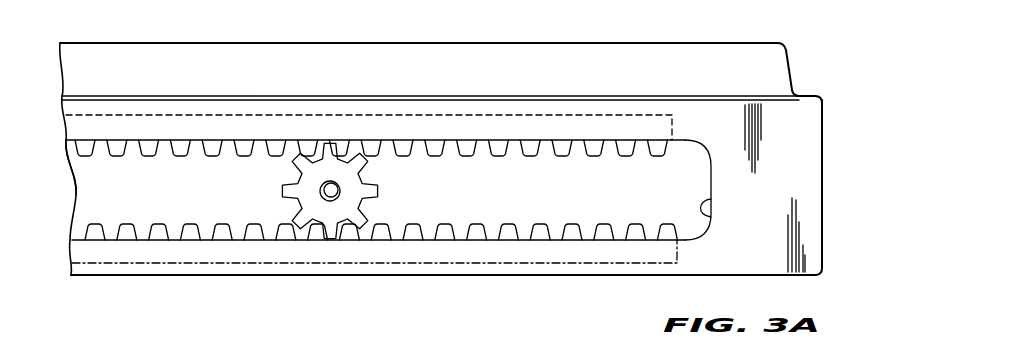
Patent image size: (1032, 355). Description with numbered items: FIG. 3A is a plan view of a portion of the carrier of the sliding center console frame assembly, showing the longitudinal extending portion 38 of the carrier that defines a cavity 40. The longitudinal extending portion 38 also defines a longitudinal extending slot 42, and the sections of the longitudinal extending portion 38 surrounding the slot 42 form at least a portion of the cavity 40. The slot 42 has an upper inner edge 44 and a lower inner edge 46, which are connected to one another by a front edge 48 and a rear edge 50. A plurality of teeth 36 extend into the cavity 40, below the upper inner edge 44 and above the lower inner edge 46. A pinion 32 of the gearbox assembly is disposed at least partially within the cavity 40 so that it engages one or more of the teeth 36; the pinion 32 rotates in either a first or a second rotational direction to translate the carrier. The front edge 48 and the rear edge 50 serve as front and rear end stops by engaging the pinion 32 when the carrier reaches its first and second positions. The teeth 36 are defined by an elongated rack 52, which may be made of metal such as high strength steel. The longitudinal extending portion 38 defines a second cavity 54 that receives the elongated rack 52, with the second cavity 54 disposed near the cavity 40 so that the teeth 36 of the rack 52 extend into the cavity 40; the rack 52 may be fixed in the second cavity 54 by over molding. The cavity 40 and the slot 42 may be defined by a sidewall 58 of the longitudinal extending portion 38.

The pinion 32 is at (330, 208).
The plurality of teeth 36 is at (667, 232).
The longitudinal extending portion 38 is at (818, 75).
The cavity 40 is at (117, 198).
The longitudinal extending slot 42 is at (712, 185).
The upper inner edge 44 is at (97, 148).
The lower inner edge 46 is at (150, 230).
The front edge 48 is at (709, 218).
The rear edge 50 is at (77, 197).
The elongated rack 52 is at (298, 125).
The second cavity 54 is at (210, 115).
The first sidewall 58 is at (823, 193).